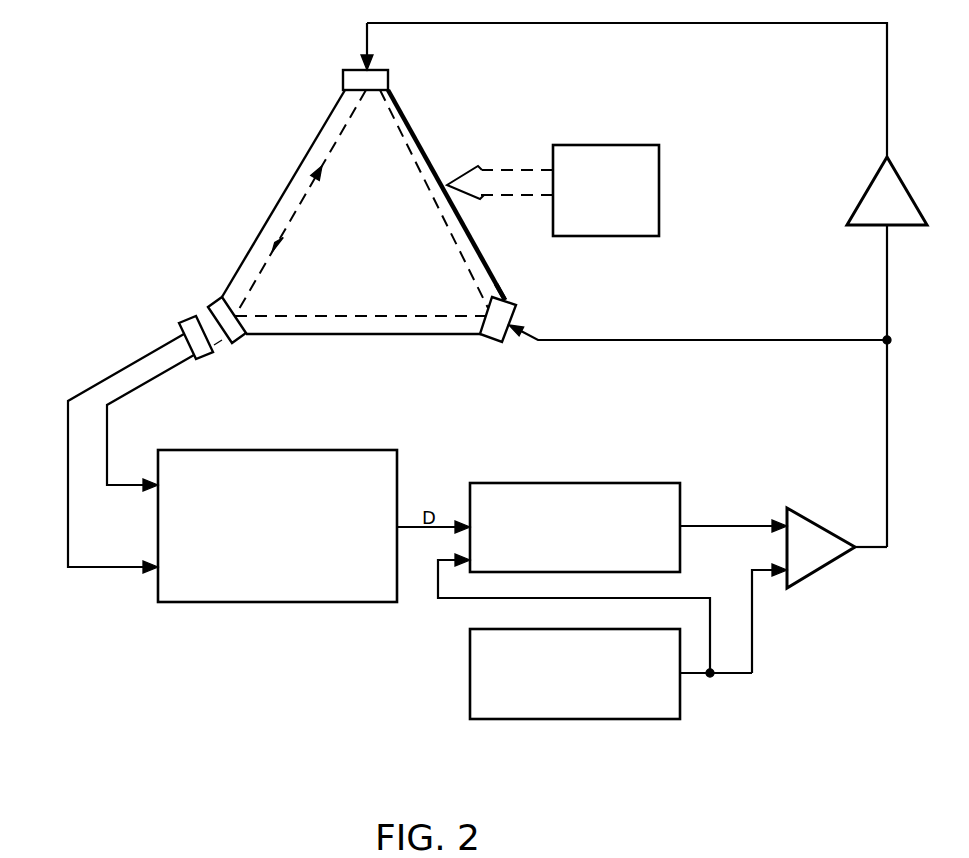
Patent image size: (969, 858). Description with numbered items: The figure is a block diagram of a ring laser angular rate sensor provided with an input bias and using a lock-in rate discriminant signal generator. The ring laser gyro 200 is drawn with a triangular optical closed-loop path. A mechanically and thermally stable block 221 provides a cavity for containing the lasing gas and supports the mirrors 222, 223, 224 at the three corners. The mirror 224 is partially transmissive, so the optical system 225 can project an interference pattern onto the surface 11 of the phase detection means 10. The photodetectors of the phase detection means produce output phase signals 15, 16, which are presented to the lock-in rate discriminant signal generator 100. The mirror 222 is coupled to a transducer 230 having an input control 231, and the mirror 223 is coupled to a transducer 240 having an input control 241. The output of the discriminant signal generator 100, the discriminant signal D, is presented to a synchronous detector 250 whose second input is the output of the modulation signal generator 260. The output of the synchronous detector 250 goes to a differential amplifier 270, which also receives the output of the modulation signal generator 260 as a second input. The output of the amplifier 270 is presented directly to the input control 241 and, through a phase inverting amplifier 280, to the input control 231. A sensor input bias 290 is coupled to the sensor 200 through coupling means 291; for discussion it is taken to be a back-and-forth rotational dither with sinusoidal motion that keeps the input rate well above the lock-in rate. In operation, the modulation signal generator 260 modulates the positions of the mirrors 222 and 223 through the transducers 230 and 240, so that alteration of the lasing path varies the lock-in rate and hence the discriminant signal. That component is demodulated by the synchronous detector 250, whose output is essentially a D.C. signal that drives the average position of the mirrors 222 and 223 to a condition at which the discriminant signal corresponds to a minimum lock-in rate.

The phase detection means 10 is at (189, 318).
The surface 11 is at (213, 352).
The output phase signal 15 is at (118, 570).
The output phase signal 16 is at (130, 487).
The lock-in rate discriminant signal generator 100 is at (300, 450).
The ring laser gyro 200 is at (384, 226).
The block 221 is at (295, 180).
The mirror 222 is at (393, 98).
The mirror 223 is at (500, 290).
The mirror 224 is at (252, 336).
The optical system 225 is at (217, 300).
The transducer 230 is at (383, 80).
The input control 231 is at (352, 68).
The transducer 240 is at (520, 306).
The input control 241 is at (503, 344).
The synchronous detector 250 is at (550, 483).
The modulation signal generator 260 is at (560, 720).
The differential amplifier 270 is at (801, 516).
The phase inverting amplifier 280 is at (872, 178).
The sensor input bias 290 is at (645, 145).
The coupling means 291 is at (487, 168).